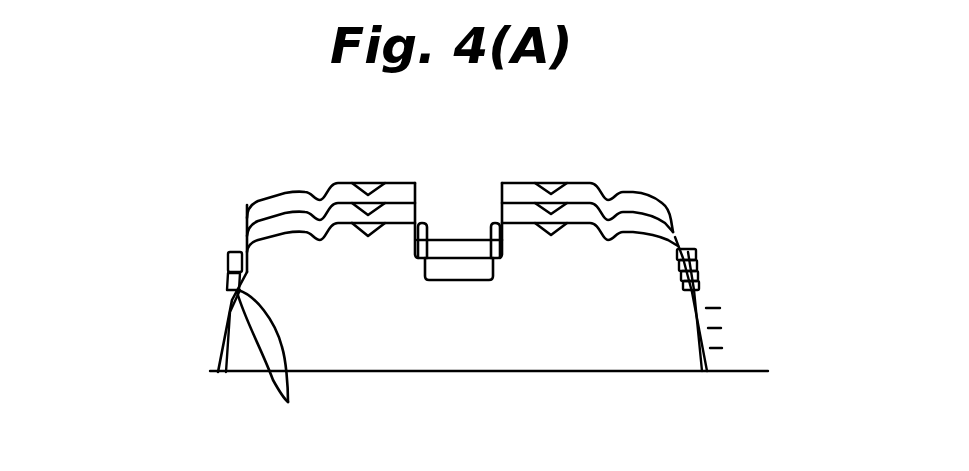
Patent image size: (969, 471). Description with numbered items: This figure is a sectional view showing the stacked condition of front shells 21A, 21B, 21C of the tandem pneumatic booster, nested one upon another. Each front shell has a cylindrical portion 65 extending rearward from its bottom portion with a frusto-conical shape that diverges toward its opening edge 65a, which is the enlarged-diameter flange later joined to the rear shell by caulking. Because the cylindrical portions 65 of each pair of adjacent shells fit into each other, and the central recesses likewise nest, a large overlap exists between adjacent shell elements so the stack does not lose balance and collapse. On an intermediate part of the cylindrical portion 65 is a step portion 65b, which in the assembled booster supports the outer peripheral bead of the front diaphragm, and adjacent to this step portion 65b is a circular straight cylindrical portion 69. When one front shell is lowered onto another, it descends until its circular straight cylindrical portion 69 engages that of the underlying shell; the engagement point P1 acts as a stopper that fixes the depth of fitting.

The front shell 21A is at (676, 233).
The front shell 21B is at (656, 217).
The front shell 21C is at (640, 189).
The cylindrical portion 65 is at (247, 218).
The opening edge 65a is at (213, 332).
The step portion 65b is at (228, 252).
The circular straight cylindrical portion 69 is at (694, 258).
The engagement point P1 is at (271, 363).